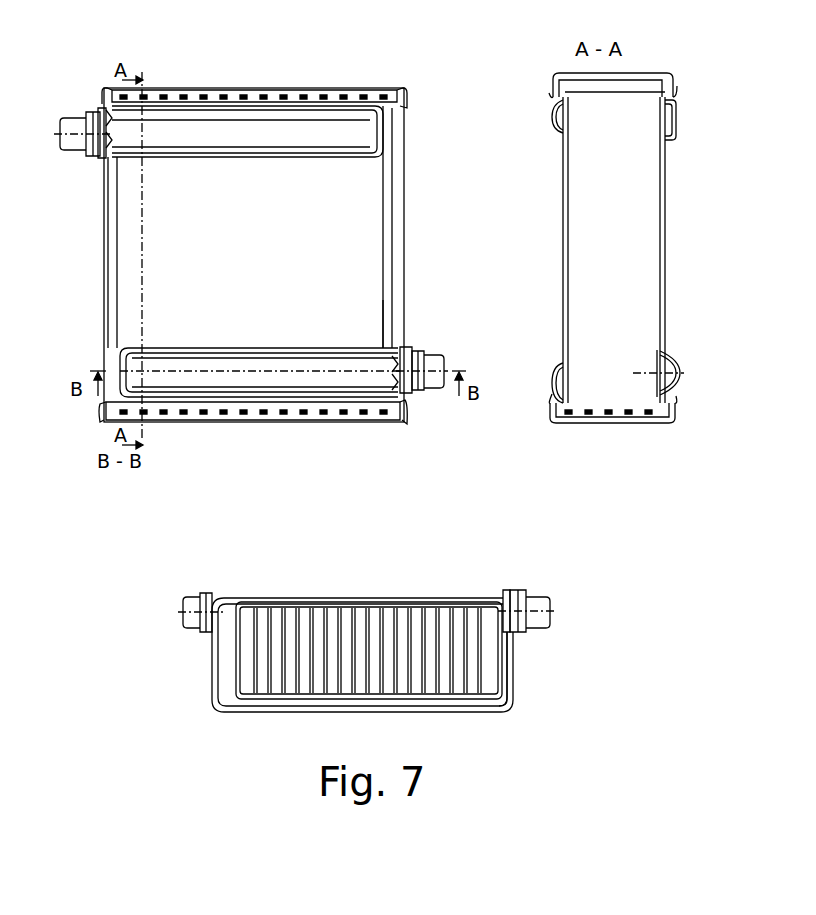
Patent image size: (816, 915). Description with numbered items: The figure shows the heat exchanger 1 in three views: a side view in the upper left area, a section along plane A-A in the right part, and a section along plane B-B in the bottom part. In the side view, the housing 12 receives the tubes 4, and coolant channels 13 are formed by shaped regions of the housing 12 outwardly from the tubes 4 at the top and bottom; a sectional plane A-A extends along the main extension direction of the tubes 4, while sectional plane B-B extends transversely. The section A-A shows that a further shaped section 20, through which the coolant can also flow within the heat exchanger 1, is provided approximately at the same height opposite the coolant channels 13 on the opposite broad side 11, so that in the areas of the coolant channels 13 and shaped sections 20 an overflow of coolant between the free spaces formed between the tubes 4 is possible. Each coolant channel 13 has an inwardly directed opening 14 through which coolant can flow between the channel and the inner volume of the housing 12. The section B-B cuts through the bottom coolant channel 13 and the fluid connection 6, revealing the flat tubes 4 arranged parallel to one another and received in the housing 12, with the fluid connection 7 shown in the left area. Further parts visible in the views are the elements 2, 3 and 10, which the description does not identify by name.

The heat exchanger 1 is at (202, 83).
The first header plate 2 is at (312, 90).
The second header plate 3 is at (312, 416).
The tubes 4 is at (435, 685).
The fluid connection 6 is at (430, 358).
The fluid connection 7 is at (74, 120).
The side wall 10 is at (108, 196).
The broad side 11 is at (140, 284).
The housing 12 is at (392, 184).
The coolant channel 13 is at (376, 136).
The opening 14 is at (358, 348).
The shaped section 20 is at (556, 112).